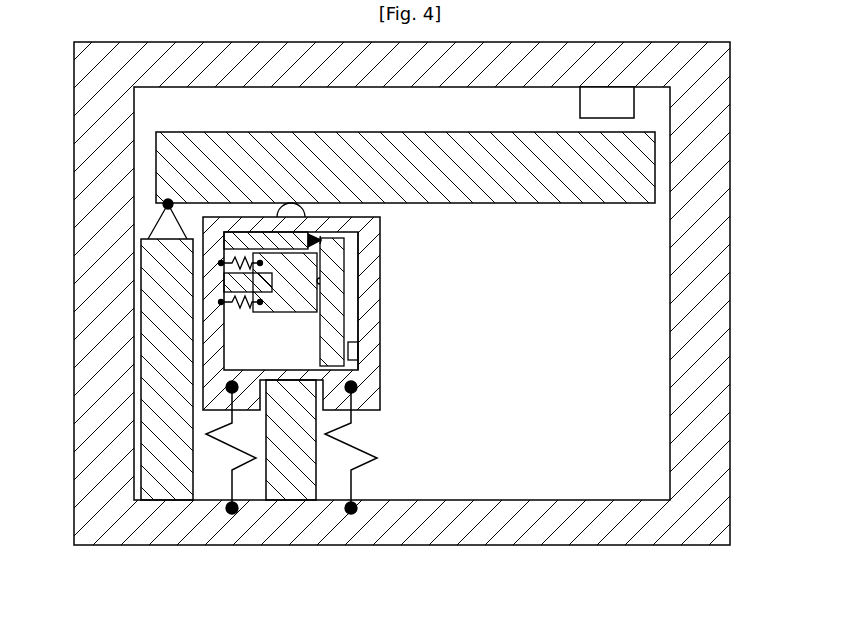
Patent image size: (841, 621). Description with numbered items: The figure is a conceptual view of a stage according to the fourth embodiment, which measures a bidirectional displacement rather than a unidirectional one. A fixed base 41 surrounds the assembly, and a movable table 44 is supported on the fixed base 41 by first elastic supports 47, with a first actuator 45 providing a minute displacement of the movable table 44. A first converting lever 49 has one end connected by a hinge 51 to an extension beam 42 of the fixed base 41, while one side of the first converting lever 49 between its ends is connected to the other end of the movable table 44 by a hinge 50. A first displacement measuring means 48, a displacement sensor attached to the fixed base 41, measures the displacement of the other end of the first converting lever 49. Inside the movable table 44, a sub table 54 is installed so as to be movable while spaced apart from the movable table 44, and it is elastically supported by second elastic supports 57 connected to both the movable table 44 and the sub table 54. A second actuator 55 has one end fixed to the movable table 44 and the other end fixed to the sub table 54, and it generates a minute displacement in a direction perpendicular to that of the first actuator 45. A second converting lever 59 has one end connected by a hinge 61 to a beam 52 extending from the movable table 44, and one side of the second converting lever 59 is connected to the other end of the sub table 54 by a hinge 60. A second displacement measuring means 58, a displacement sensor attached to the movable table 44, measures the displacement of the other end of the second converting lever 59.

The fixed base 41 is at (708, 72).
The extension beam 42 is at (140, 440).
The movable table 44 is at (372, 386).
The first actuator 45 is at (290, 487).
The first elastic supports 47 is at (230, 488).
The first displacement measuring means 48 is at (616, 103).
The first converting lever 49 is at (556, 190).
The hinge 50 is at (291, 204).
The hinge 51 is at (163, 182).
The beam 52 is at (290, 233).
The sub table 54 is at (292, 306).
The second actuator 55 is at (240, 306).
The second elastic supports 57 is at (254, 306).
The second displacement measuring means 58 is at (355, 350).
The second converting lever 59 is at (362, 312).
The hinge 60 is at (346, 283).
The hinge 61 is at (336, 245).